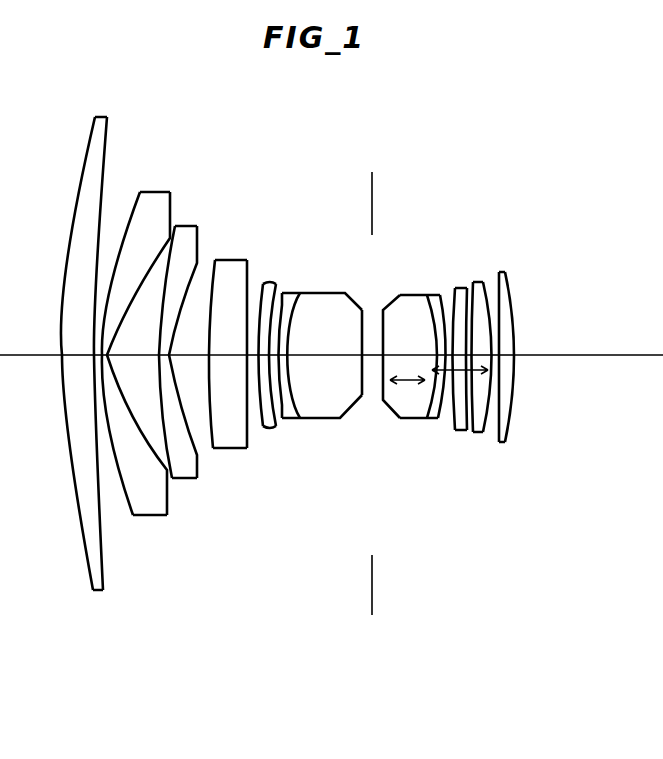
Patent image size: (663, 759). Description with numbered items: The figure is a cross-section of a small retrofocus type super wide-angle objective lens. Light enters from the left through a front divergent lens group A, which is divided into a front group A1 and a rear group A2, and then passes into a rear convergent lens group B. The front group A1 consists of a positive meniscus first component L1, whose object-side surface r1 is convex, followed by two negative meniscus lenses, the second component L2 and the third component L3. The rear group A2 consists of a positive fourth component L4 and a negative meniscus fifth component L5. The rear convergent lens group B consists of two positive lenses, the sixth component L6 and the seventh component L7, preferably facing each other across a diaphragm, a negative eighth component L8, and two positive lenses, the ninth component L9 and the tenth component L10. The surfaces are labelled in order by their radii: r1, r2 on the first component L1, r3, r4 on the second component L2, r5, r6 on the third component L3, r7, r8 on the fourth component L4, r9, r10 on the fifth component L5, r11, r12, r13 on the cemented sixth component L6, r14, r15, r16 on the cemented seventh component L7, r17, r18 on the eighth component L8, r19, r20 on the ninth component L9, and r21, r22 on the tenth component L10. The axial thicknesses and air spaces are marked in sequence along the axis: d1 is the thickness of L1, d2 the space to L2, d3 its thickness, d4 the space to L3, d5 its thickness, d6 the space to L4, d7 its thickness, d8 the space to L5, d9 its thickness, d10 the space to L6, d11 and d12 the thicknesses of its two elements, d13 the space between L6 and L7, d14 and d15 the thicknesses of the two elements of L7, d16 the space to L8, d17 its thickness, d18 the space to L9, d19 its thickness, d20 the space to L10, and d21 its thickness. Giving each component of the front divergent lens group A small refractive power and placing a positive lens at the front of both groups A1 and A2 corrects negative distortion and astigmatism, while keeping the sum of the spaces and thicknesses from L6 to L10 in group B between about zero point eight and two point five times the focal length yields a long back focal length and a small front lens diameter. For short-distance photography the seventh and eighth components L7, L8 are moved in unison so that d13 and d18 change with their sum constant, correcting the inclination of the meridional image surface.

The first component L1 is at (88, 328).
The second component L2 is at (141, 358).
The third component L3 is at (172, 331).
The fourth component L4 is at (219, 317).
The fifth component L5 is at (285, 333).
The sixth component L6 is at (345, 348).
The seventh component L7 is at (429, 360).
The eighth component L8 is at (505, 340).
The ninth component L9 is at (515, 342).
The tenth component L10 is at (543, 344).
The front divergent lens group A is at (278, 677).
The front group A1 is at (198, 607).
The rear group A2 is at (278, 489).
The rear convergent lens group B is at (508, 489).
The axial thickness of first component d1 is at (75, 352).
The air space between first and second components d2 is at (92, 366).
The axial thickness of second component d3 is at (104, 350).
The air space between second and third components d4 is at (133, 346).
The axial thickness of third component d5 is at (163, 358).
The air space between third and fourth components d6 is at (189, 346).
The axial thickness of fourth component d7 is at (246, 352).
The air space between fourth and fifth components d8 is at (253, 348).
The axial thickness of fifth component d9 is at (262, 362).
The air space between fifth and sixth components d10 is at (274, 400).
The axial thickness of first element of sixth component d11 is at (289, 365).
The axial thickness of second element of sixth component d12 is at (324, 346).
The air space between sixth and seventh components d13 is at (373, 353).
The axial thickness of first element of seventh component d14 is at (440, 357).
The axial thickness of second element of seventh component d15 is at (438, 348).
The air space between seventh and eighth components d16 is at (448, 340).
The axial thickness of eighth component d17 is at (462, 345).
The air space between eighth and ninth components d18 is at (470, 352).
The axial thickness of ninth component d19 is at (480, 350).
The air space between ninth and tenth components d20 is at (494, 368).
The axial thickness of tenth component d21 is at (510, 362).
The object-side surface of first component r1 is at (76, 527).
The image-side surface of first component r2 is at (98, 526).
The object-side surface of second component r3 is at (130, 517).
The image-side surface of second component r4 is at (160, 450).
The object-side surface of third component r5 is at (164, 430).
The image-side surface of third component r6 is at (177, 402).
The object-side surface of fourth component r7 is at (212, 430).
The image-side surface of fourth component r8 is at (249, 426).
The object-side surface of fifth component r9 is at (259, 428).
The image-side surface of fifth component r10 is at (274, 415).
The object-side surface of sixth component r11 is at (286, 408).
The cemented surface of sixth component r12 is at (320, 414).
The image-side surface of sixth component r13 is at (364, 408).
The object-side surface of seventh component r14 is at (396, 418).
The cemented surface of seventh component r15 is at (430, 420).
The image-side surface of seventh component r16 is at (441, 425).
The object-side surface of eighth component r17 is at (456, 432).
The image-side surface of eighth component r18 is at (467, 385).
The object-side surface of ninth component r19 is at (475, 410).
The image-side surface of ninth component r20 is at (488, 430).
The object-side surface of tenth component r21 is at (501, 440).
The image-side surface of tenth component r22 is at (517, 425).